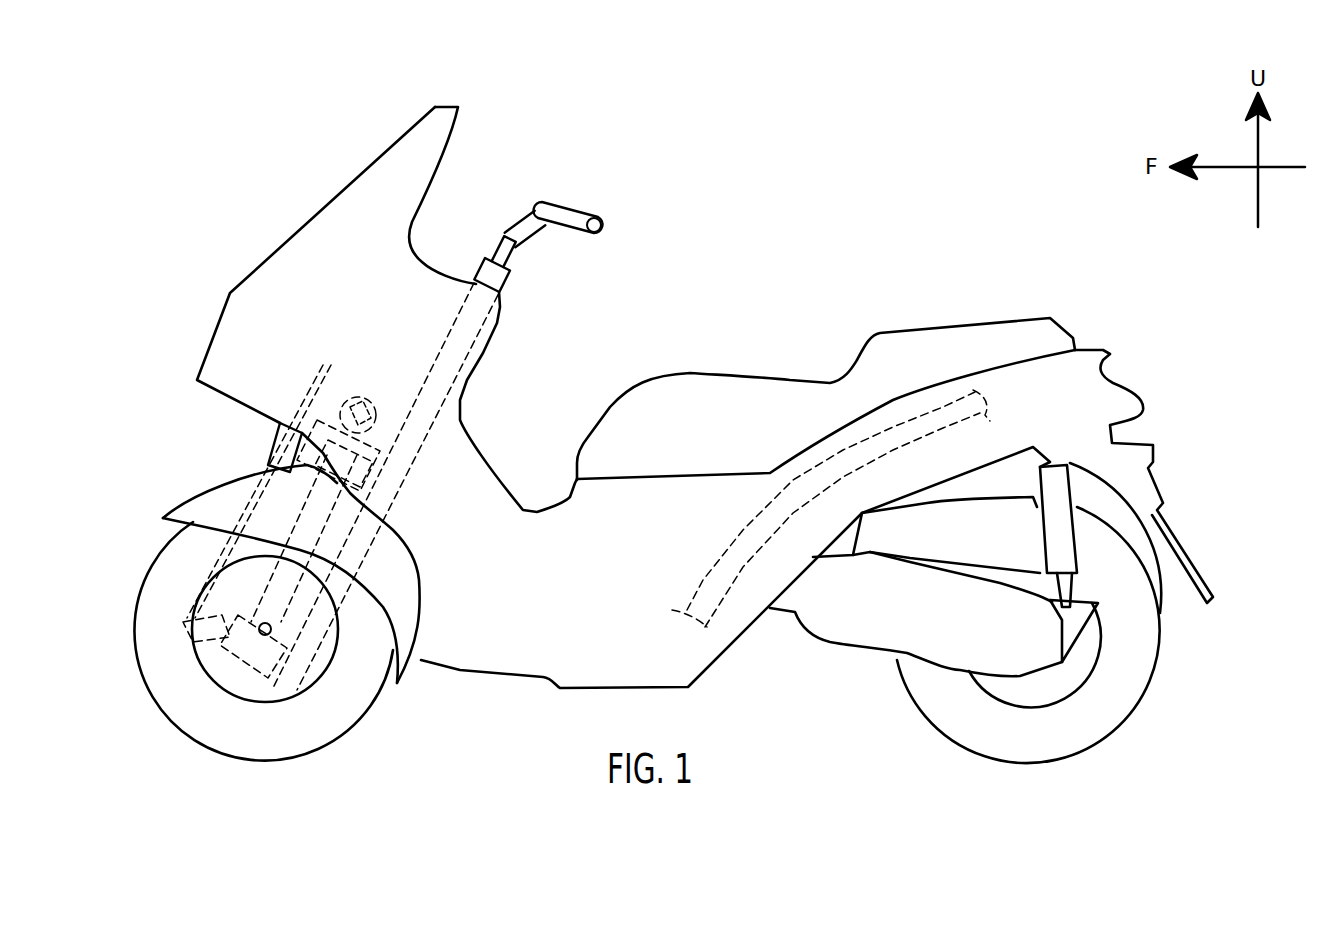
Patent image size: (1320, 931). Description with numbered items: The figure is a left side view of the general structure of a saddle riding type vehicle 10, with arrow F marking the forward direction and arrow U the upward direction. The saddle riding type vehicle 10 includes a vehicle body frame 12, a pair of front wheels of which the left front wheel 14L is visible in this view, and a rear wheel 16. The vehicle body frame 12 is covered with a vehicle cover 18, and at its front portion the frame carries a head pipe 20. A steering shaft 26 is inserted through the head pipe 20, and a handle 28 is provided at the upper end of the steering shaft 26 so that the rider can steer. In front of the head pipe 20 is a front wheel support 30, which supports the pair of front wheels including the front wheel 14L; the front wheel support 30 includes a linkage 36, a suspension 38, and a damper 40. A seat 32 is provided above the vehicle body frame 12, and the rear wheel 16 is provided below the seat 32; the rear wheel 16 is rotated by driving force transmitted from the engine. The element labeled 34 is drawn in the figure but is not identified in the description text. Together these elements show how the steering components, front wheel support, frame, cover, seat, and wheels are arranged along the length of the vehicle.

The saddle riding type vehicle 10 is at (378, 127).
The vehicle body frame 12 is at (943, 400).
The front wheel 14L is at (370, 710).
The rear wheel 16 is at (1148, 685).
The vehicle cover 18 is at (720, 658).
The head pipe 20 is at (508, 280).
The steering shaft 26 is at (503, 246).
The handle 28 is at (580, 207).
The front wheel support 30 is at (250, 456).
The seat 32 is at (745, 375).
The power unit 34 is at (863, 650).
The linkage 36 is at (238, 675).
The suspension 38 is at (372, 397).
The damper 40 is at (280, 430).